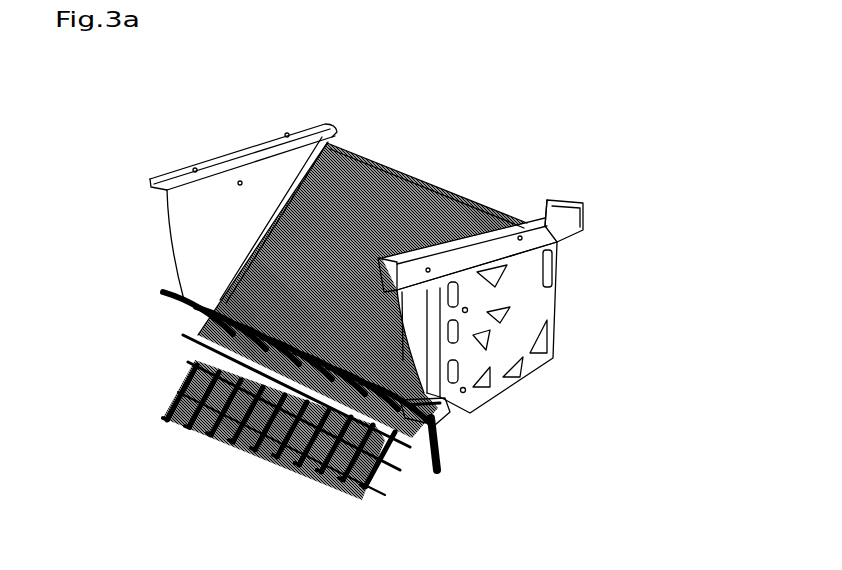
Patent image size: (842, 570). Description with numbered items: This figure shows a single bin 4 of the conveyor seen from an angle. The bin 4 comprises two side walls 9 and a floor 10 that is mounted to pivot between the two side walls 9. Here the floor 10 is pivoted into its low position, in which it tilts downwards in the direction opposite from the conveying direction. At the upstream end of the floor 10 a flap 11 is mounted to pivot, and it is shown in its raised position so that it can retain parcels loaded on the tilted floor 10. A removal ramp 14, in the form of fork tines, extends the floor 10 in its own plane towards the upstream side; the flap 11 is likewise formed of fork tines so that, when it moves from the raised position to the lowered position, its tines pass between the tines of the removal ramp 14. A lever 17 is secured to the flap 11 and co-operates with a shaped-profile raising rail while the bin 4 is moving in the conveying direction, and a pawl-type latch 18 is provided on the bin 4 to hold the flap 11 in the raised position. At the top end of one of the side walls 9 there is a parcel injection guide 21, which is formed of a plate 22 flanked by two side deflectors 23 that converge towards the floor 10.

The bin 4 is at (411, 350).
The side walls 9 is at (200, 223).
The floor 10 is at (398, 172).
The flap 11 is at (163, 295).
The removal ramp 14 is at (238, 448).
The lever 17 is at (408, 450).
The pawl-type latch 18 is at (447, 440).
The parcel injection guide 21 is at (506, 200).
The plate 22 is at (552, 233).
The side deflectors 23 is at (548, 200).